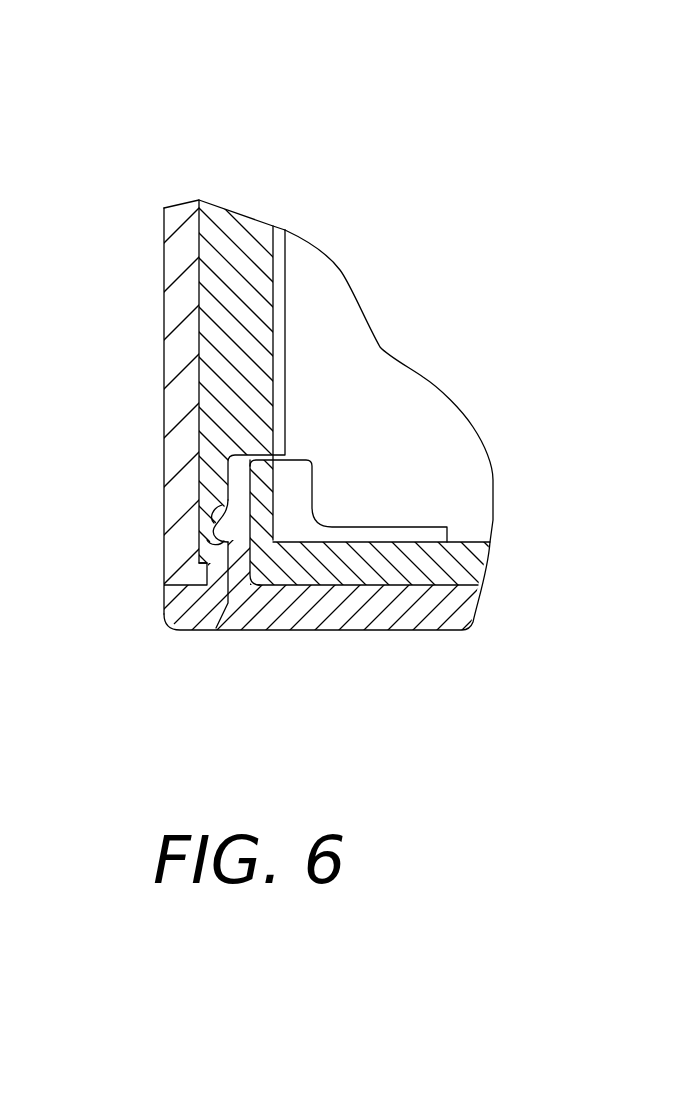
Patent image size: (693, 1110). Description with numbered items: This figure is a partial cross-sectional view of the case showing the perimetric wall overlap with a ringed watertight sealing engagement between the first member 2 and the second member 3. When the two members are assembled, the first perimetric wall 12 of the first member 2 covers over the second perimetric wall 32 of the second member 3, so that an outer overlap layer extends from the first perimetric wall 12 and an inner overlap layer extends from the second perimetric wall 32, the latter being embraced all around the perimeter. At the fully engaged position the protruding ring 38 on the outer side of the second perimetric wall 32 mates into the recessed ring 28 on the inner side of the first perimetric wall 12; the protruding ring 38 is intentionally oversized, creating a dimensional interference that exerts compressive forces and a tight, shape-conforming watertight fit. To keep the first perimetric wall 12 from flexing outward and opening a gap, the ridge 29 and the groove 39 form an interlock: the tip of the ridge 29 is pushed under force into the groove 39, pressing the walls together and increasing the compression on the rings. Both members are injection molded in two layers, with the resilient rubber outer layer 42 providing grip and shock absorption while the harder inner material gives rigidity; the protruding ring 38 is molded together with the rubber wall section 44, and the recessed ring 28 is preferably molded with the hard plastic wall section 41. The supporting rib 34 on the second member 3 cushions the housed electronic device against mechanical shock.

The first member 2 is at (435, 228).
The second member 3 is at (388, 588).
The first perimetric wall 12 is at (192, 337).
The recessed ring 28 is at (217, 540).
The ridge 29 is at (170, 553).
The second perimetric wall 32 is at (388, 588).
The supporting rib 34 is at (417, 527).
The protruding ring 38 is at (207, 502).
The groove 39 is at (216, 628).
The wall section 41 is at (240, 240).
The outer layer 42 is at (182, 307).
The wall section 44 is at (440, 603).